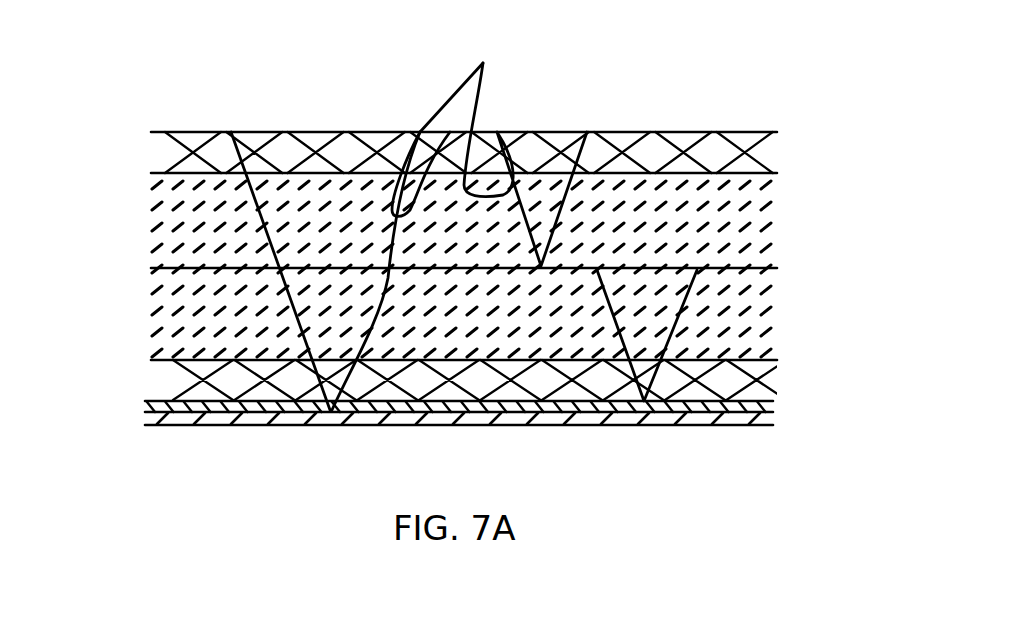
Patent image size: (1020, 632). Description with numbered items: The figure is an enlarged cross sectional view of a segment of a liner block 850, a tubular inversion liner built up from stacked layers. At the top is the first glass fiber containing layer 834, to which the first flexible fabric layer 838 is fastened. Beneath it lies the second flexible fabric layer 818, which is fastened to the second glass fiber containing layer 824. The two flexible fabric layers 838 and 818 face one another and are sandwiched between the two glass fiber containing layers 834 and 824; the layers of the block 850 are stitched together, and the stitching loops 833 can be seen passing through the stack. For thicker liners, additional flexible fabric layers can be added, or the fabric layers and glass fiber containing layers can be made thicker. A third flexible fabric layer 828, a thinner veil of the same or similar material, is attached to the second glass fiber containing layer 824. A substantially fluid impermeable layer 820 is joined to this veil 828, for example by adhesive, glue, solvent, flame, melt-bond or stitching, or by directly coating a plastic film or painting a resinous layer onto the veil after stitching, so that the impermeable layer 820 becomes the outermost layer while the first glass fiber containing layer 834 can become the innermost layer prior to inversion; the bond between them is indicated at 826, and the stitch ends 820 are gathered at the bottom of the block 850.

The liner block 850 is at (472, 300).
The first glass fiber containing layer 834 is at (768, 158).
The first flexible fabric layer 838 is at (183, 227).
The second flexible fabric layer 818 is at (757, 308).
The second glass fiber containing layer 824 is at (768, 382).
The third flexible fabric layer 828 is at (153, 403).
The bottom adhesive layer 826 is at (709, 439).
The stitching loops 833 is at (544, 211).
The substantially fluid impermeable layer 820 is at (343, 418).